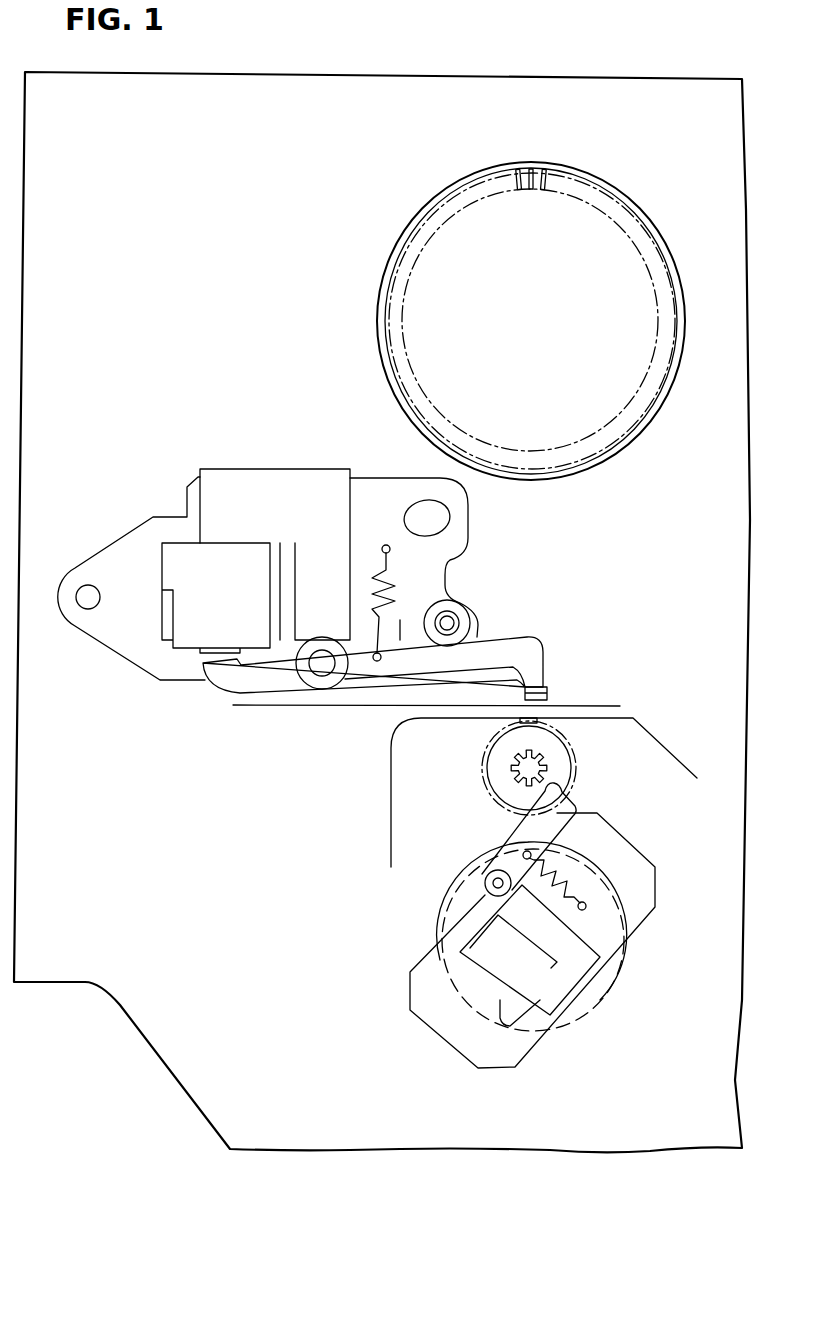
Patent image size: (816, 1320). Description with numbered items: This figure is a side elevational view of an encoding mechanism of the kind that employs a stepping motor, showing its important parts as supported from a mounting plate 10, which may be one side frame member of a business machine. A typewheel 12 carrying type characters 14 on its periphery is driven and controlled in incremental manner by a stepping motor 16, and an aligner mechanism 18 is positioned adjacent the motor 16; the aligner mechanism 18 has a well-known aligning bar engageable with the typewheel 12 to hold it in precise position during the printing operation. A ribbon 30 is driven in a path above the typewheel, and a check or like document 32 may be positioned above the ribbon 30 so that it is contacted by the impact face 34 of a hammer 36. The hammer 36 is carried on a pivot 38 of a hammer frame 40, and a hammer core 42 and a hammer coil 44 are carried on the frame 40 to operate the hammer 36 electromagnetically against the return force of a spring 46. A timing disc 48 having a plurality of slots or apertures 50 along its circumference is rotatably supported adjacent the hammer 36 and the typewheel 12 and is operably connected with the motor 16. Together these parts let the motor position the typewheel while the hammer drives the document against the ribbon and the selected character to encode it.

The mounting plate 10 is at (180, 189).
The typewheel 12 is at (575, 758).
The type characters 14 is at (497, 727).
The stepping motor 16 is at (595, 987).
The aligner mechanism 18 is at (553, 828).
The ribbon 30 is at (391, 848).
The check or like document 32 is at (258, 707).
The impact face 34 is at (548, 698).
The hammer 36 is at (528, 643).
The pivot 38 is at (319, 668).
The hammer frame 40 is at (463, 525).
The hammer core 42 is at (250, 475).
The hammer coil 44 is at (185, 555).
The spring 46 is at (385, 583).
The timing disc 48 is at (430, 203).
The slots or apertures 50 is at (548, 180).